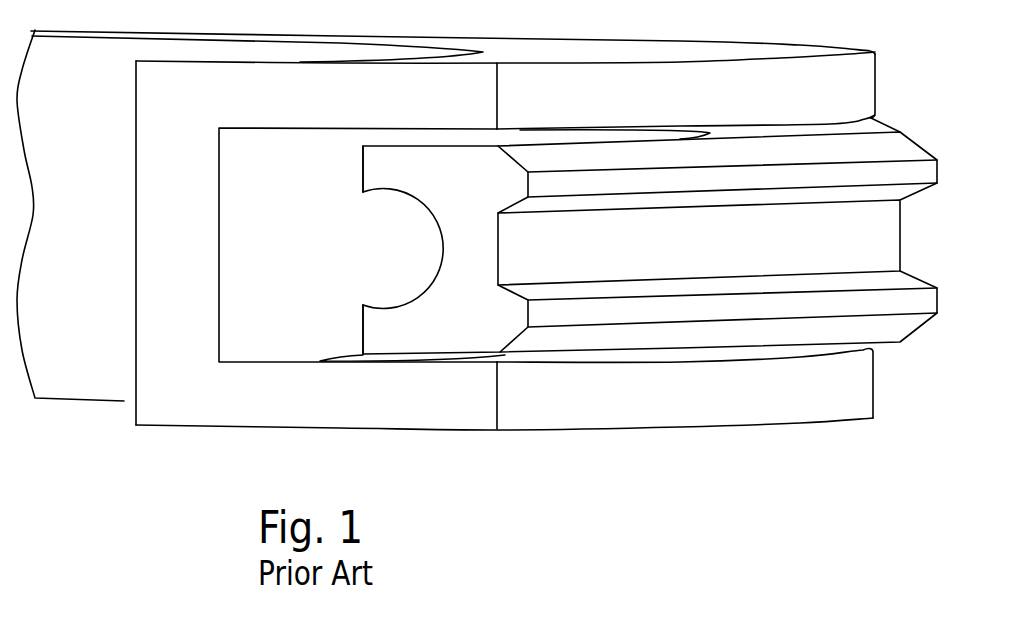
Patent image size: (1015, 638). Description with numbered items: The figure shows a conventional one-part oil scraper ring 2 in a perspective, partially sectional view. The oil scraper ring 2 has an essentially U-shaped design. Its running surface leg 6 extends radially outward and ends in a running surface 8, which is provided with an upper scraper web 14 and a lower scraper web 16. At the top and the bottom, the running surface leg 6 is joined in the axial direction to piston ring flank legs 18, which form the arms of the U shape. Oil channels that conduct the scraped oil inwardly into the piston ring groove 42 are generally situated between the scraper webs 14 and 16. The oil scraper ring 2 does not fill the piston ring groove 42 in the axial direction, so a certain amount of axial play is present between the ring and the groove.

The oil scraper ring 2 is at (917, 256).
The running surface leg 6 is at (445, 250).
The running surface 8 is at (699, 242).
The upper scraper web 14 is at (708, 166).
The lower scraper web 16 is at (712, 311).
The piston ring flank legs 18 is at (385, 250).
The piston ring groove 42 is at (446, 230).